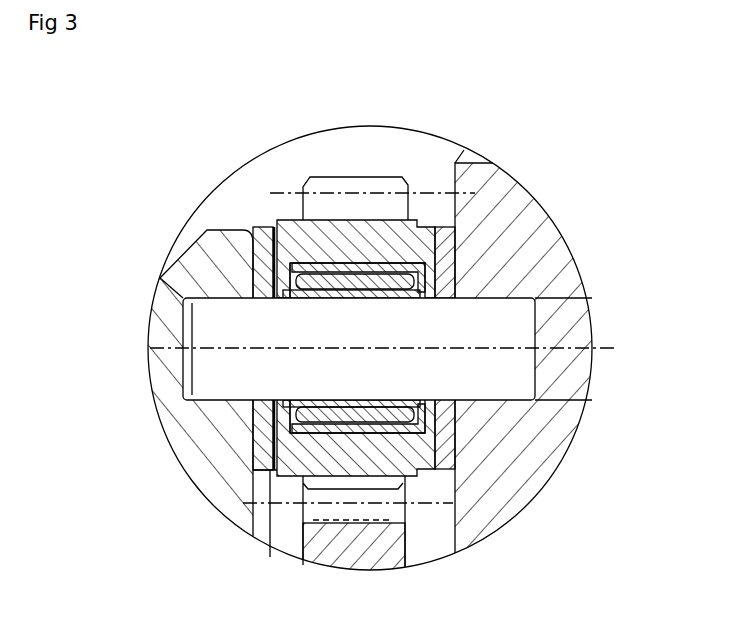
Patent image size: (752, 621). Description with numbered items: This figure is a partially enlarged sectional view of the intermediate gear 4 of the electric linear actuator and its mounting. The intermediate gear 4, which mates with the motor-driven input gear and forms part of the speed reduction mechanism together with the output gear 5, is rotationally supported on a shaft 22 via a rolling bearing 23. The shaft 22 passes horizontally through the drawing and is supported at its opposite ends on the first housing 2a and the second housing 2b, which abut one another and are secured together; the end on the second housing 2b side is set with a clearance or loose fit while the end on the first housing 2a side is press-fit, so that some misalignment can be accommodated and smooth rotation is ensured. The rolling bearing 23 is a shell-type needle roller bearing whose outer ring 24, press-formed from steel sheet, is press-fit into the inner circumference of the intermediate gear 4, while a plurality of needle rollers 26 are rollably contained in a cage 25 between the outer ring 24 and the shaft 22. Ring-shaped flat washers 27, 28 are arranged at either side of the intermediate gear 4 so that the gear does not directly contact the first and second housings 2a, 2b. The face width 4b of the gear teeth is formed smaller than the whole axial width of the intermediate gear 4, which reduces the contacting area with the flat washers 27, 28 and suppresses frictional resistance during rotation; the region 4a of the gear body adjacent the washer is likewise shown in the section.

The first housing 2a is at (193, 276).
The second housing 2b is at (540, 253).
The intermediate gear 4 is at (359, 322).
The nut body portion 4a is at (290, 273).
The face width 4b is at (350, 187).
The output gear 5 is at (390, 555).
The shaft 22 is at (217, 358).
The rolling bearing 23 is at (495, 371).
The outer ring 24 is at (330, 410).
The cage 25 is at (400, 410).
The needle rollers 26 is at (432, 405).
The flat washer 27 is at (257, 461).
The flat washer 28 is at (440, 465).